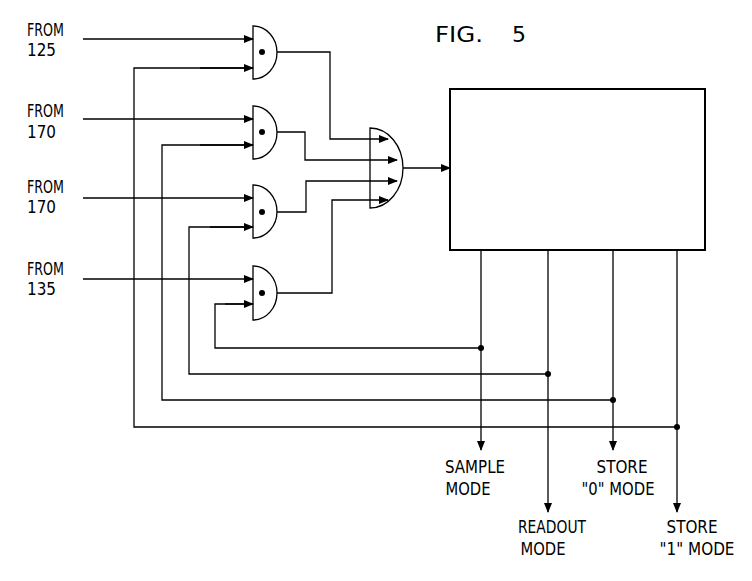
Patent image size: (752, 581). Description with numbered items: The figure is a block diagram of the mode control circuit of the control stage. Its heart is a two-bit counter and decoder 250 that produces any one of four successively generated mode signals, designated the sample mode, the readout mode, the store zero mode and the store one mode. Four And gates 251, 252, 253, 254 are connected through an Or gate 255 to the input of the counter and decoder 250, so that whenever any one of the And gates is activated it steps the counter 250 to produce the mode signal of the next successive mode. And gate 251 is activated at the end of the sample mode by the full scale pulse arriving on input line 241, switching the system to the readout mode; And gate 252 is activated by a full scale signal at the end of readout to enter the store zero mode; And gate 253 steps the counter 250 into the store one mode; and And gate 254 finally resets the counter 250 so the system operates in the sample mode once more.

The 2-bit counter and decoder 250 is at (637, 89).
The And gate 251 is at (269, 274).
The And gate 252 is at (269, 192).
The And gate 253 is at (269, 113).
The And gate 254 is at (269, 33).
The Or gate 255 is at (394, 137).
The input line from 135 241 is at (168, 262).